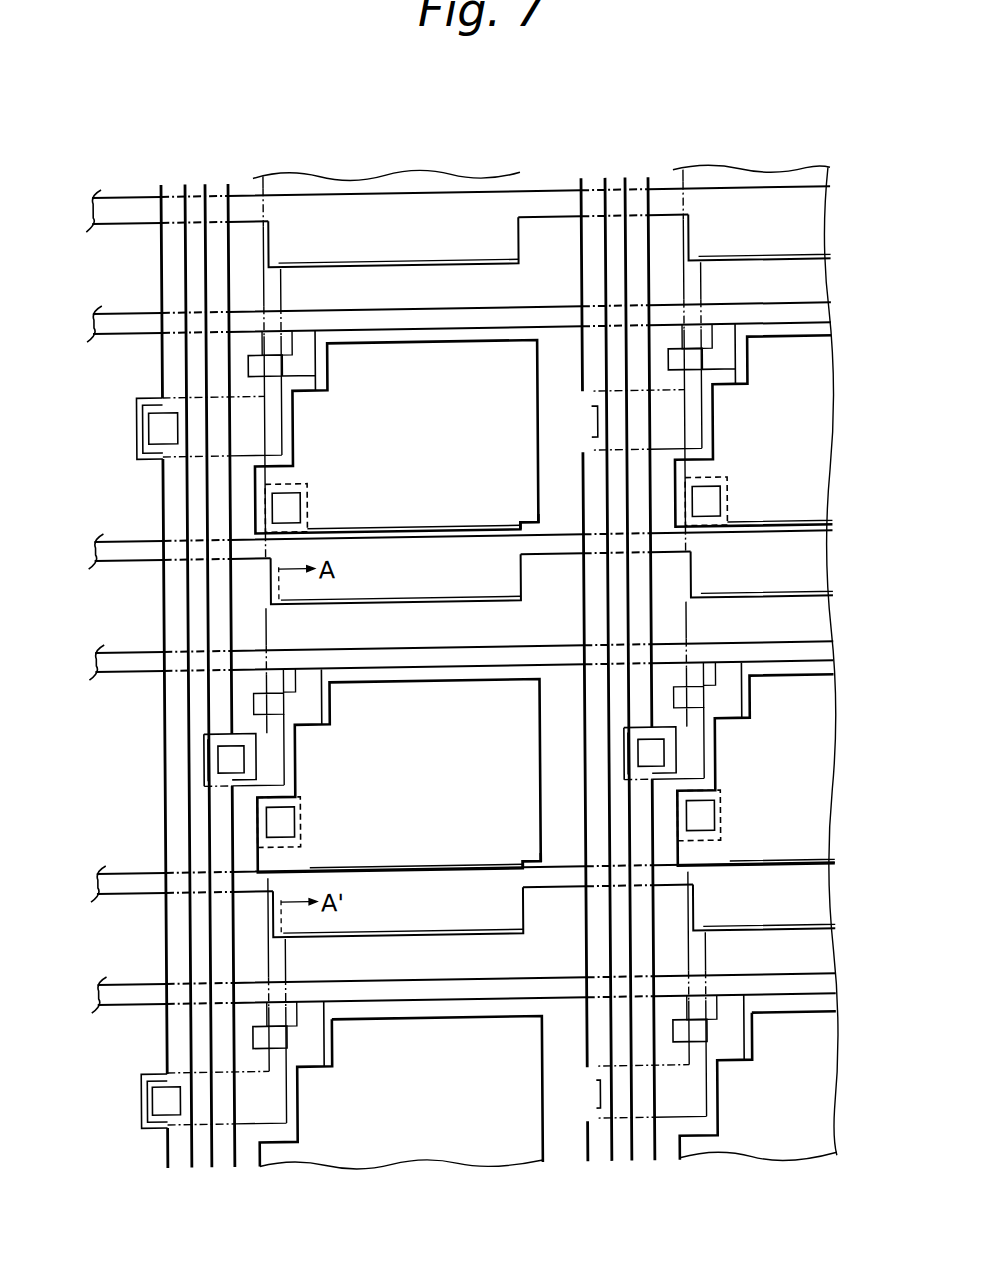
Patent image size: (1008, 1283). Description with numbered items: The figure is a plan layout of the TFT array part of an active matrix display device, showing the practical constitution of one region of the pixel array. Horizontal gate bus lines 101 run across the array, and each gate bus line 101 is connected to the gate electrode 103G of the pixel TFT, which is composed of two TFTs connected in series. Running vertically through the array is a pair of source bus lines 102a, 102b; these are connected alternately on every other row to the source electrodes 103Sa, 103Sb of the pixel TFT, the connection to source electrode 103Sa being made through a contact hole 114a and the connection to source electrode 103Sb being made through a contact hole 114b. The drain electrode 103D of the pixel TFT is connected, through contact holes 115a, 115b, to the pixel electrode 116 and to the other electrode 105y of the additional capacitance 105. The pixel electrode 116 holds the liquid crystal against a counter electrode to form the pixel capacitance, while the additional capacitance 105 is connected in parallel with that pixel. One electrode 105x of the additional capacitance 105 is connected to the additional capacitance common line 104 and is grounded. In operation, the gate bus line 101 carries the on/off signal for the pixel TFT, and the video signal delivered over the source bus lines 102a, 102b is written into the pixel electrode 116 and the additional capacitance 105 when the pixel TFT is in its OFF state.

The gate bus line 101 is at (818, 300).
The source bus line 102a is at (163, 712).
The source bus line 102b is at (208, 840).
The gate electrode 103G is at (278, 703).
The source electrode 103Sa is at (160, 460).
The source electrode 103Sb is at (205, 790).
The drain electrode 103D is at (300, 847).
The additional capacitance common line 104 is at (134, 898).
The additional capacitance 105 is at (428, 578).
The one electrode of the additional capacitance 105x is at (438, 868).
The other electrode of the additional capacitance 105y is at (494, 862).
The contact hole 114a is at (148, 430).
The contact hole 114b is at (210, 755).
The contact hole 115a is at (288, 812).
The contact hole 115b is at (287, 492).
The pixel electrode 116 is at (446, 346).